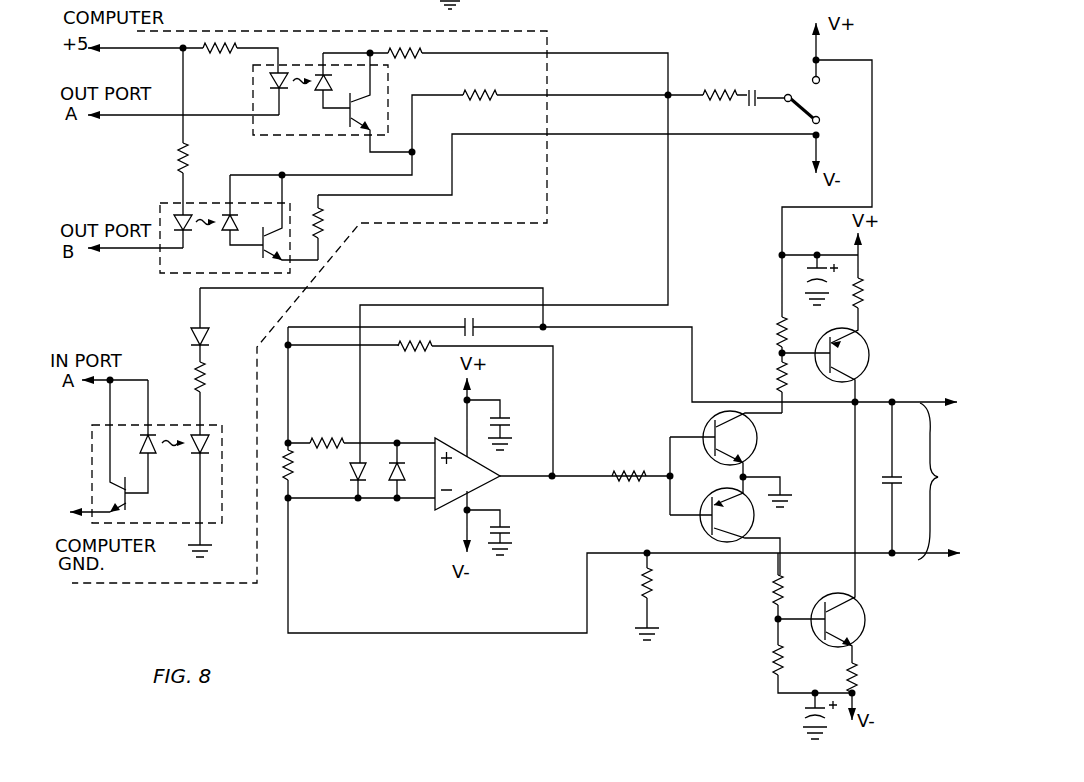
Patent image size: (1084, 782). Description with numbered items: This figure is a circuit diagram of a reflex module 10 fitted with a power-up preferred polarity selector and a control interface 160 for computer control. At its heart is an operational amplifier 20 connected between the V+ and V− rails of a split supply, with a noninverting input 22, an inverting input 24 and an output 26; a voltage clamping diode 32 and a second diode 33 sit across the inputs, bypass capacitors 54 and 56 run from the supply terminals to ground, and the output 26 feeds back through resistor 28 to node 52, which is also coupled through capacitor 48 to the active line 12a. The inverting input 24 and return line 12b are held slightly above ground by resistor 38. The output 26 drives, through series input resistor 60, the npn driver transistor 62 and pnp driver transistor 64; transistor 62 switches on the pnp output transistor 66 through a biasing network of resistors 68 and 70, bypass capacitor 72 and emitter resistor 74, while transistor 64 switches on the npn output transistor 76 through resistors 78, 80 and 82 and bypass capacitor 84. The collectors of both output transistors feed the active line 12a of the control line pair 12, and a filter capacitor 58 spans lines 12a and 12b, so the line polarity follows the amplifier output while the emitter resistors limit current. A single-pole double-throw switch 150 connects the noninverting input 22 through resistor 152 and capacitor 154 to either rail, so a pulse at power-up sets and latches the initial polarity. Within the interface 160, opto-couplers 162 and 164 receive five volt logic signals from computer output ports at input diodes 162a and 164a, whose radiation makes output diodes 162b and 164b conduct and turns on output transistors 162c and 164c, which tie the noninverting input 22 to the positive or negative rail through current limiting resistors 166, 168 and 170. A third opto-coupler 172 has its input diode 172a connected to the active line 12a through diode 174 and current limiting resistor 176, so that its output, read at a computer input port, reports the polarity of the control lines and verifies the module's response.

The reflex module 10 is at (602, 635).
The control line pair 12 is at (941, 481).
The active line 12a is at (920, 400).
The return line 12b is at (920, 555).
The operational amplifier 20 is at (453, 502).
The noninverting input 22 is at (417, 442).
The inverting input 24 is at (407, 503).
The output 26 is at (512, 478).
The resistor 28 is at (408, 347).
The voltage clamping diode 32 is at (350, 473).
The zener diode 33 is at (395, 444).
The resistor 38 is at (652, 578).
The capacitor 48 is at (470, 318).
The node 52 is at (288, 442).
The bypass capacitor 54 is at (512, 418).
The bypass capacitor 56 is at (518, 535).
The filter capacitor 58 is at (880, 479).
The series input resistor 60 is at (627, 469).
The npn driver transistor 62 is at (759, 445).
The pnp driver transistor 64 is at (757, 524).
The pnp output transistor 66 is at (868, 343).
The resistor 68 is at (777, 337).
The resistor 70 is at (777, 368).
The bypass capacitor 72 is at (810, 272).
The emitter resistor 74 is at (865, 290).
The npn output transistor 76 is at (866, 622).
The resistor 78 is at (772, 580).
The resistor 80 is at (770, 663).
The emitter resistor 82 is at (862, 675).
The bypass capacitor 84 is at (800, 712).
The switch 150 is at (790, 96).
The resistor 152 is at (745, 37).
The capacitor 154 is at (742, 108).
The control interface 160 is at (131, 583).
The opto-coupler 162 is at (300, 63).
The input diode 162a is at (265, 86).
The output diode 162b is at (348, 95).
The output transistor 162c is at (355, 109).
The opto-coupler 164 is at (160, 272).
The input diode 164a is at (170, 225).
The output diode 164b is at (248, 213).
The output transistor 164c is at (278, 247).
The current limiting resistor 166 is at (500, 80).
The current limiting resistor 168 is at (406, 62).
The current limiting resistor 170 is at (327, 221).
The opto-coupler 172 is at (90, 442).
The input diode 172a is at (208, 434).
The diode 174 is at (190, 335).
The current limiting resistor 176 is at (187, 376).